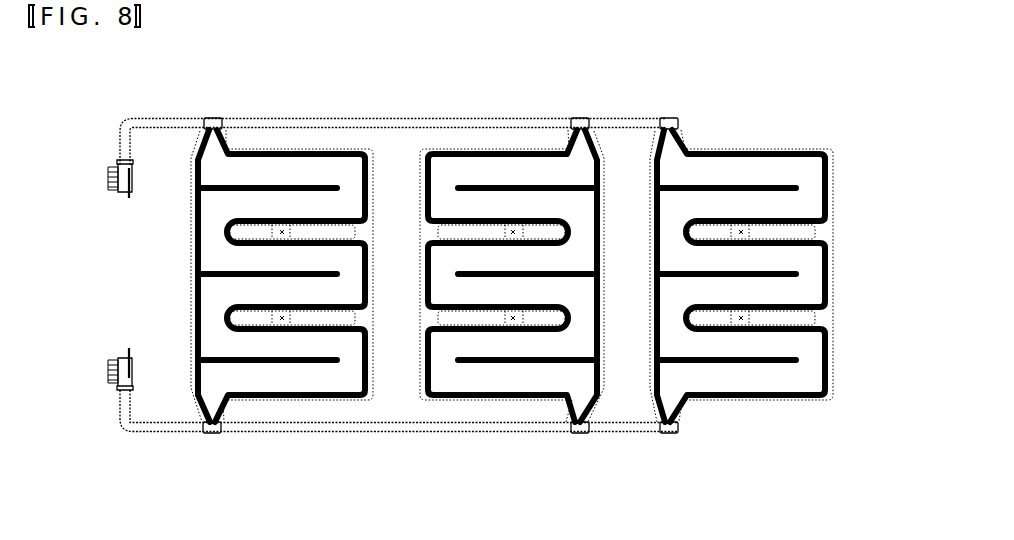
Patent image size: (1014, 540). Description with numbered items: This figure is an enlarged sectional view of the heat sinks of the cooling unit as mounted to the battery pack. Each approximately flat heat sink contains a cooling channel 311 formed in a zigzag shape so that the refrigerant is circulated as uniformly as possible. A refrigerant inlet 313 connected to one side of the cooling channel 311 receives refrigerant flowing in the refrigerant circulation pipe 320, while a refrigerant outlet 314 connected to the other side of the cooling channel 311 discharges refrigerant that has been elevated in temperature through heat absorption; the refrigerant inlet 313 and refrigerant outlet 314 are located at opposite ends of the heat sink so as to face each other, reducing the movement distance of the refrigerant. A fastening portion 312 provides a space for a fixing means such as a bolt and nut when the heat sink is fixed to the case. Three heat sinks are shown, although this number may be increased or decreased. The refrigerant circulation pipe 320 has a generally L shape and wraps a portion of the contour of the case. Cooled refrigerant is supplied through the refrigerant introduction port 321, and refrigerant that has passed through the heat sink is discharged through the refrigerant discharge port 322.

The cooling channel 311 is at (805, 162).
The fastening portion 312 is at (748, 232).
The refrigerant inlet 313 is at (213, 433).
The refrigerant outlet 314 is at (212, 118).
The refrigerant circulation pipe 320 is at (434, 122).
The refrigerant introduction port 321 is at (116, 370).
The refrigerant discharge port 322 is at (116, 178).